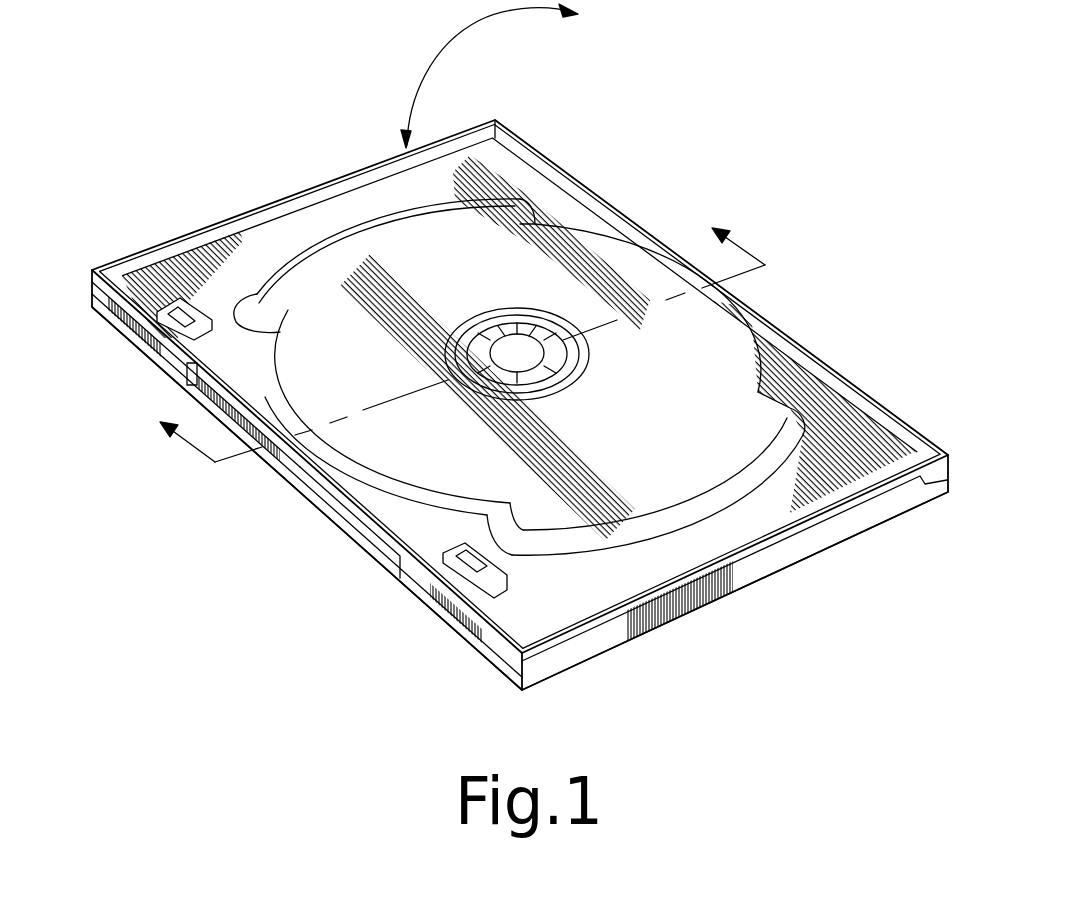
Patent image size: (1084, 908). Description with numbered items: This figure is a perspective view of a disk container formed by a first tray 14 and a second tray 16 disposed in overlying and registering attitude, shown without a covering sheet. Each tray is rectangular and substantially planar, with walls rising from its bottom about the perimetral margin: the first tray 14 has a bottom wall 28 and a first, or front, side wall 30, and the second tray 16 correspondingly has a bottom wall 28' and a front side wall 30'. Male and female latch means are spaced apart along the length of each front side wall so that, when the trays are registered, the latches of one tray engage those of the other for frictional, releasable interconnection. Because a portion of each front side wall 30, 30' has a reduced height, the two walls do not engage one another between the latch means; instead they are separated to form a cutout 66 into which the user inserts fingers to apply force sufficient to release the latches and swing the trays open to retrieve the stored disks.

The first tray 14 is at (537, 657).
The second tray 16 is at (603, 657).
The bottom wall 28 is at (713, 613).
The bottom wall 28' is at (734, 568).
The first (front) side wall 30 is at (296, 485).
The first (front) side wall 30' is at (181, 342).
The cutout 66 is at (351, 512).